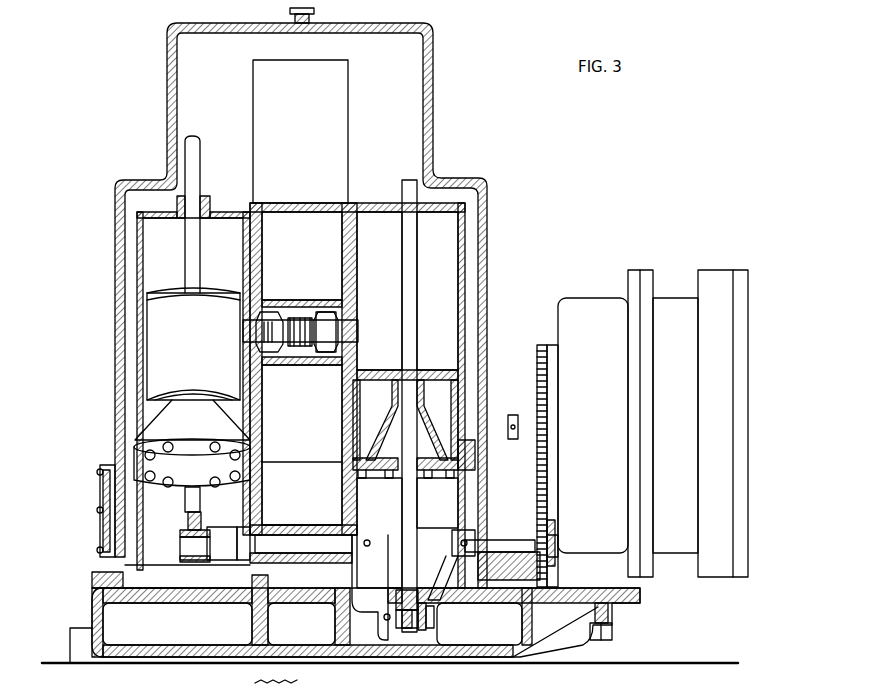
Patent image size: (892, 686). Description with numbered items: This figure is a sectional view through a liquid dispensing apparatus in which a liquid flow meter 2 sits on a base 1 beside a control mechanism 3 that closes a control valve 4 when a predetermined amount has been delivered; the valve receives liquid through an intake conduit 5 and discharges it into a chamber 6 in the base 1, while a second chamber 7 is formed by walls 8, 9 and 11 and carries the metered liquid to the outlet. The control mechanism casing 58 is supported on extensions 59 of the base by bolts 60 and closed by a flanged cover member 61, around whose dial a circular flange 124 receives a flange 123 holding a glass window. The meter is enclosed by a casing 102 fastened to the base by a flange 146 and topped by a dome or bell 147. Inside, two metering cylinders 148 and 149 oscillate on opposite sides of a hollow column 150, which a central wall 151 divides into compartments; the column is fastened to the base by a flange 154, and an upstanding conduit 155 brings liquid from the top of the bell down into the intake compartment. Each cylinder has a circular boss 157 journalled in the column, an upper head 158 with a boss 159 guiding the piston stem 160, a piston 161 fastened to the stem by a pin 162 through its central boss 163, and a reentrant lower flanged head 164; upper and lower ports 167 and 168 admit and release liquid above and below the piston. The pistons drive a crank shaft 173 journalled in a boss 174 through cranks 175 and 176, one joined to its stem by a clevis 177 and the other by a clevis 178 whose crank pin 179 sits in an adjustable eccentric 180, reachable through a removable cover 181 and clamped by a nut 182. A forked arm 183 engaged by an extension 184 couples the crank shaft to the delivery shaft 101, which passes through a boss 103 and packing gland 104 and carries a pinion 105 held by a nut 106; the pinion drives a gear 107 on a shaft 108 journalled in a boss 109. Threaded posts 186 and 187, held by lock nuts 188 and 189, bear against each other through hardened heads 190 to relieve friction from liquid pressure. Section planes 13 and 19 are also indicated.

The base 1 is at (92, 605).
The liquid flow meter 2 is at (437, 63).
The control mechanism 3 is at (597, 392).
The control valve 4 is at (330, 175).
The intake conduit 5 is at (218, 495).
The chamber 6 is at (185, 637).
The chamber 7 is at (308, 635).
The wall 8 is at (638, 232).
The wall 9 is at (252, 637).
The wall 11 is at (348, 636).
The section line 13 is at (42, 645).
The section line 19 is at (220, 285).
The control mechanism casing 58 is at (578, 300).
The extensions 59 is at (575, 622).
The bolts 60 is at (612, 640).
The flanged cover member 61 is at (680, 305).
The delivery shaft 101 is at (478, 505).
The casing 102 is at (487, 336).
The boss 103 is at (495, 530).
The packing gland 104 is at (525, 540).
The pinion 105 is at (550, 512).
The nut 106 is at (552, 537).
The gear 107 is at (552, 463).
The shaft 108 is at (508, 432).
The boss 109 is at (550, 436).
The flange 123 is at (750, 376).
The circular flange 124 is at (748, 400).
The flange 146 is at (95, 572).
The dome or bell 147 is at (437, 40).
The metering cylinder 148 is at (466, 232).
The metering cylinder 149 is at (137, 265).
The hollow column 150 is at (352, 498).
The central wall 151 is at (316, 255).
The flange 154 is at (336, 583).
The upstanding conduit 155 is at (349, 95).
The circular boss 157 is at (247, 318).
The upper head 158 is at (137, 238).
The boss 159 is at (203, 190).
The piston stem 160 is at (200, 150).
The piston 161 is at (150, 356).
The pin 162 is at (417, 380).
The central boss 163 is at (476, 362).
The lower flanged head 164 is at (175, 426).
The upper port 167 is at (262, 245).
The lower port 168 is at (357, 430).
The crank shaft 173 is at (252, 533).
The boss 174 is at (300, 522).
The crank 175 is at (385, 552).
The crank 176 is at (255, 506).
The clevis 177 is at (410, 632).
The clevis 178 is at (188, 520).
The crank pin 179 is at (200, 534).
The eccentric 180 is at (190, 559).
The removable cover 181 is at (100, 480).
The clamp nut 182 is at (172, 547).
The forked arm 183 is at (446, 566).
The extension 184 is at (430, 630).
The threaded post 186 is at (330, 312).
The threaded post 187 is at (262, 320).
The lock nut 188 is at (300, 357).
The lock nut 189 is at (270, 314).
The heads 190 is at (302, 425).